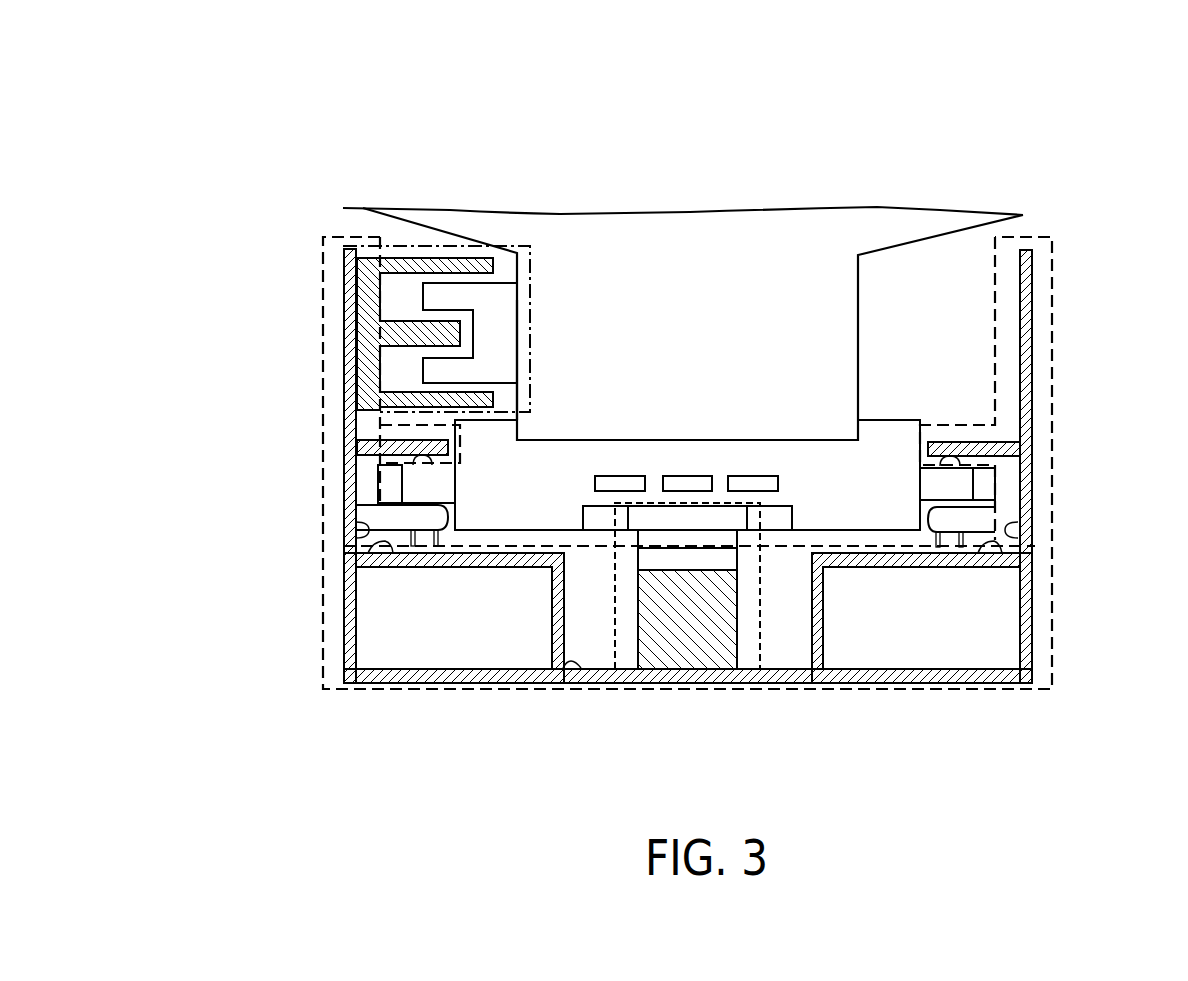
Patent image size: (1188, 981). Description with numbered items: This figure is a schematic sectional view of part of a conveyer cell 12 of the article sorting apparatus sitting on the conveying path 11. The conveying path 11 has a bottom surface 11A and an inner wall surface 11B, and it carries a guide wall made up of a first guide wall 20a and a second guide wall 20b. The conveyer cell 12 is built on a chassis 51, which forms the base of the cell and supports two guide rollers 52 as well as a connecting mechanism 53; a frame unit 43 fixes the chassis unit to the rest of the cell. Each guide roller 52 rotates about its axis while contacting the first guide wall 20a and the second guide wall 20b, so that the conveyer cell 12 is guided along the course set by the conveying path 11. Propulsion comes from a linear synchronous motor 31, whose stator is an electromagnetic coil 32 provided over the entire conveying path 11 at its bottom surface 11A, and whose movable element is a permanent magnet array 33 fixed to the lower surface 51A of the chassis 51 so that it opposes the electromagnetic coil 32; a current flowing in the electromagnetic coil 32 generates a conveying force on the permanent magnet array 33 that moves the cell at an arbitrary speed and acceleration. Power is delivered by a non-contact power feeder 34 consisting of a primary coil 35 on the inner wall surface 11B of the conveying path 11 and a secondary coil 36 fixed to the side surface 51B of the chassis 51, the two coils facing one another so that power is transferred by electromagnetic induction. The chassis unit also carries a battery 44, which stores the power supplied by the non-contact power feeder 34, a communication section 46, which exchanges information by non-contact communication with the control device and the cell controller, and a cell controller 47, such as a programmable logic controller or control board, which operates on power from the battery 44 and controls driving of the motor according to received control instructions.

The conveying path 11 is at (334, 689).
The bottom surface of the conveying path 11A is at (569, 668).
The inner wall surface of the conveying path 11B is at (367, 260).
The conveyer cell 12 is at (905, 150).
The first guide wall 20a is at (355, 530).
The second guide wall 20b is at (372, 551).
The linear synchronous motor 31 is at (614, 624).
The electromagnetic coil 32 is at (713, 653).
The permanent magnet array 33 is at (732, 537).
The non-contact power feeder 34 is at (440, 243).
The primary coil 35 is at (360, 300).
The secondary coil 36 is at (500, 293).
The frame unit 43 is at (792, 243).
The battery 44 is at (755, 476).
The communication section 46 is at (620, 476).
The cell controller 47 is at (688, 476).
The chassis 51 is at (884, 430).
The lower surface of the chassis 51A is at (578, 530).
The side surface of the chassis 51B is at (512, 323).
The guide roller 52 is at (413, 459).
The connecting mechanism 53 is at (783, 517).